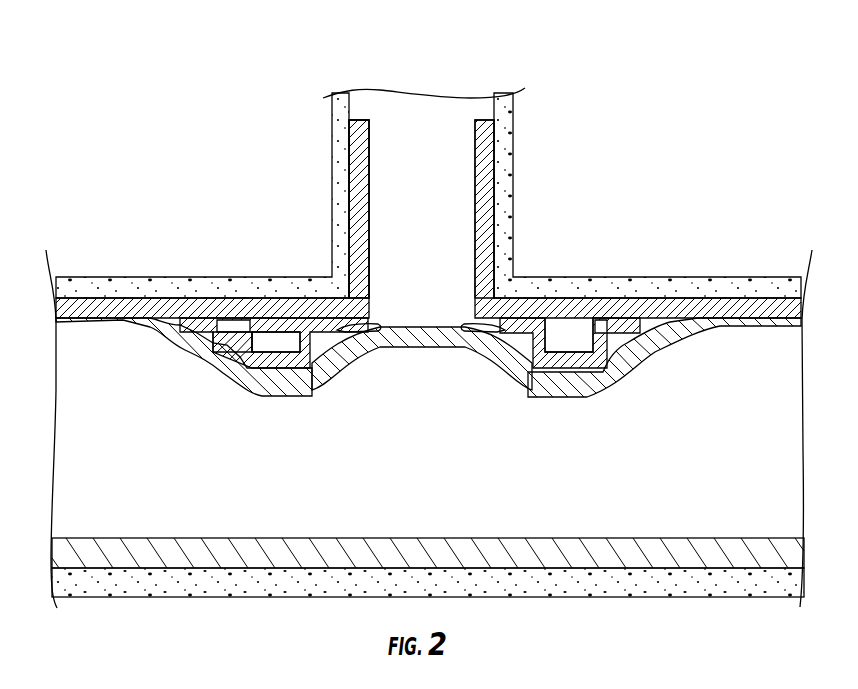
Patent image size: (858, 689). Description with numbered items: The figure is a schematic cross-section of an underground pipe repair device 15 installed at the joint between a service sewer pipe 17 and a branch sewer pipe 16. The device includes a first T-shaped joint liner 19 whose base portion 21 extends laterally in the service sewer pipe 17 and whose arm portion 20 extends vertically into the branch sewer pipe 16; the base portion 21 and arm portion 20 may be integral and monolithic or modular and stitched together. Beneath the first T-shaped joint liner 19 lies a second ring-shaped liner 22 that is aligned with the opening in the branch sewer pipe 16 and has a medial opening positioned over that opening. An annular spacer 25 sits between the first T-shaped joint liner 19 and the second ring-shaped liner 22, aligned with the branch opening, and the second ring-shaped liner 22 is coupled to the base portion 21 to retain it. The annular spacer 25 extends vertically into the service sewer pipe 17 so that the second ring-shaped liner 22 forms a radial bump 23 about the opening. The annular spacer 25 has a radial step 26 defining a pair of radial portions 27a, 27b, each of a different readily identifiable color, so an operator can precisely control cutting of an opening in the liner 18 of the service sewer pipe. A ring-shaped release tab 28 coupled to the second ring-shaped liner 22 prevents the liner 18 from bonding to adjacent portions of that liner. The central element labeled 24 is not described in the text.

The underground pipe repair device 15 is at (455, 118).
The branch sewer pipe 16 is at (505, 154).
The service sewer pipe 17 is at (104, 278).
The liner 18 is at (773, 318).
The first T-shaped joint liner 19 is at (368, 201).
The arm portion 20 is at (354, 150).
The base portion 21 is at (183, 320).
The second ring-shaped liner 22 is at (529, 338).
The radial bump 23 is at (575, 366).
The central arch member 24 is at (405, 345).
The annular spacer 25 is at (567, 334).
The radial step 26 is at (593, 327).
The radial portion 27a is at (240, 340).
The radial portion 27b is at (285, 340).
The ring-shaped release tab 28 is at (303, 368).